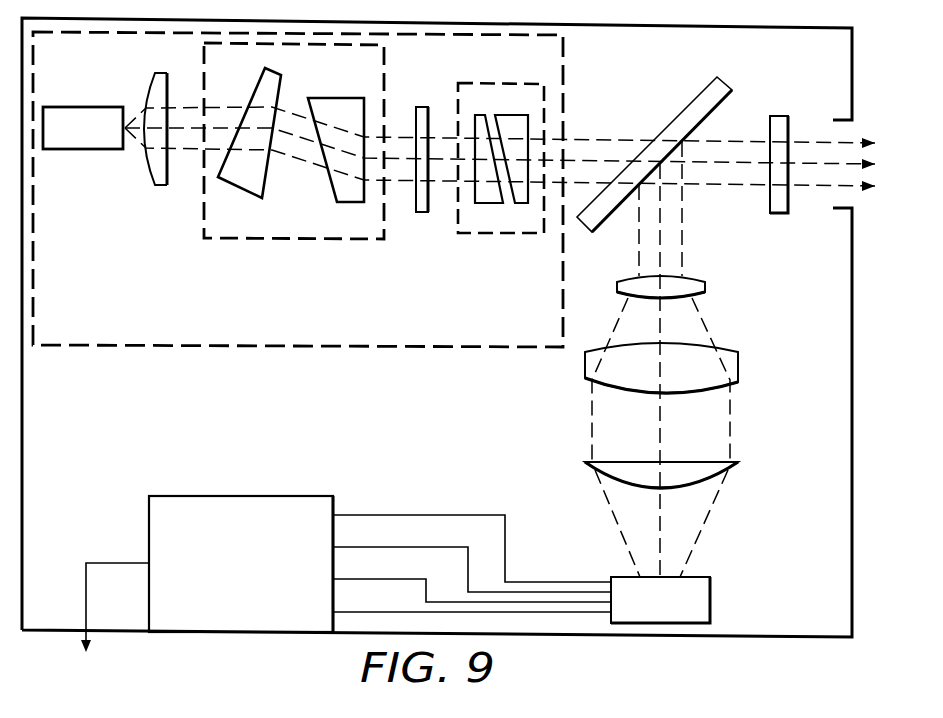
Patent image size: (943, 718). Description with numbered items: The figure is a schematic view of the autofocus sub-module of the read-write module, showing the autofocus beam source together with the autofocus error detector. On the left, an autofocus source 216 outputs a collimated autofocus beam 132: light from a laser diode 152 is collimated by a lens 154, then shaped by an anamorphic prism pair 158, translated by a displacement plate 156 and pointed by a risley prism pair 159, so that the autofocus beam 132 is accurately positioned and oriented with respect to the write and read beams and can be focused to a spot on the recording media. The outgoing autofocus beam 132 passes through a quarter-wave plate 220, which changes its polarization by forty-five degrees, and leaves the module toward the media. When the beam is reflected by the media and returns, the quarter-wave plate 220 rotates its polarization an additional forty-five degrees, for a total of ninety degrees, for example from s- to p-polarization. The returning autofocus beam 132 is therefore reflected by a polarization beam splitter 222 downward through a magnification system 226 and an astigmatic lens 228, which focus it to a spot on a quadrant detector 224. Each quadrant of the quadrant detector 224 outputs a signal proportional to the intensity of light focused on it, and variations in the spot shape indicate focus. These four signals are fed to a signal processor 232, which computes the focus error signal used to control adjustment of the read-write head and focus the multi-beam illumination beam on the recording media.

The autofocus beam 132 is at (812, 110).
The laser diode 152 is at (82, 150).
The lens 154 is at (160, 186).
The displacement plate 156 is at (420, 213).
The anamorphic prism pair 158 is at (293, 242).
The risley prism pair 159 is at (517, 236).
The autofocus source 216 is at (73, 348).
The quarter-wave plate 220 is at (768, 198).
The polarization beam splitter 222 is at (723, 82).
The quadrant detector 224 is at (712, 602).
The magnification system 226 is at (735, 338).
The astigmatic lens 228 is at (748, 420).
The signal processor 232 is at (238, 494).